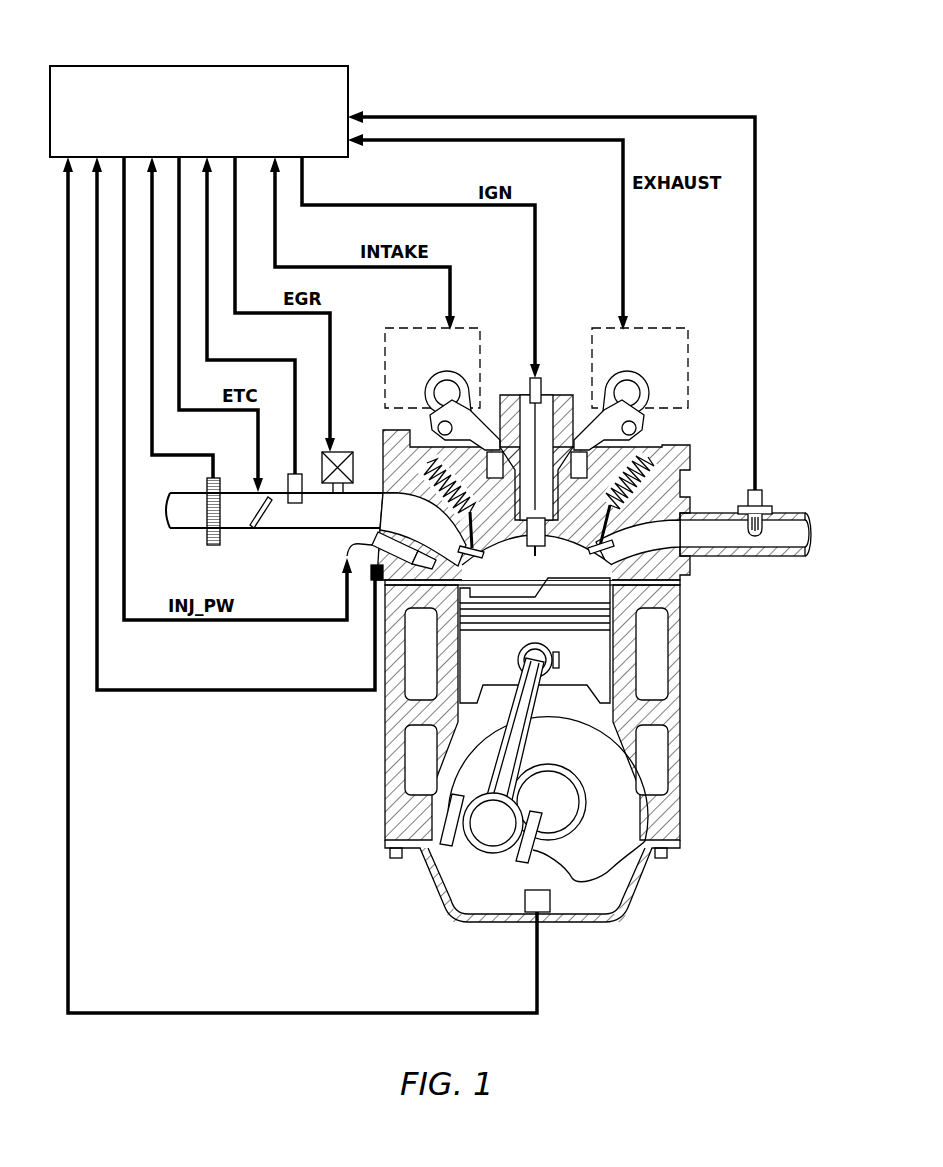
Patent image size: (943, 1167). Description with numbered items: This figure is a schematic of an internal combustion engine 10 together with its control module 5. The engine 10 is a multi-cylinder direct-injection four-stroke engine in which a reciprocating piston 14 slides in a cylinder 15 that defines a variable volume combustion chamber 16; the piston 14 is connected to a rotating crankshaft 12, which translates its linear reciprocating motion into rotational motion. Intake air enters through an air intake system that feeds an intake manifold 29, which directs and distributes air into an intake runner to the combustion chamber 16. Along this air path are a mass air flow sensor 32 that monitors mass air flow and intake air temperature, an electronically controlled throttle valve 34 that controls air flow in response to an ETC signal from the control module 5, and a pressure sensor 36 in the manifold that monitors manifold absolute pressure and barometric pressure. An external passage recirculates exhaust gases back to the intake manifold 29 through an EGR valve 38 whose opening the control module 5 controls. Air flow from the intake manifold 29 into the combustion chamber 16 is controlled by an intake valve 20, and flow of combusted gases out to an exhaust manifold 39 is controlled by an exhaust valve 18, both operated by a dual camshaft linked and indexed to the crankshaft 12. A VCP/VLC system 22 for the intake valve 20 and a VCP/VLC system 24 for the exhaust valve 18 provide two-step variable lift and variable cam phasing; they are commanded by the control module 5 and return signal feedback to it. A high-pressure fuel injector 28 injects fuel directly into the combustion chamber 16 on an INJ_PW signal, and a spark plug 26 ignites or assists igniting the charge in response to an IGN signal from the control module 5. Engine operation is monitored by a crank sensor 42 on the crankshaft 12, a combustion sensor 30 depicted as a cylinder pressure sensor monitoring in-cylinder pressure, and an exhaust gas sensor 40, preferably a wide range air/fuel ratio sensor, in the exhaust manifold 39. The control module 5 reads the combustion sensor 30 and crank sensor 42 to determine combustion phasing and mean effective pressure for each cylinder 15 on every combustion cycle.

The control module 5 is at (165, 62).
The internal combustion engine 10 is at (690, 712).
The crankshaft 12 is at (588, 857).
The piston 14 is at (588, 670).
The cylinder 15 is at (612, 595).
The combustion chamber 16 is at (511, 583).
The exhaust valve 18 is at (603, 544).
The intake valve 20 is at (457, 523).
The VCP/VLC system for intake valves 22 is at (475, 333).
The VCP/VLC system for exhaust valves 24 is at (677, 387).
The spark plug 26 is at (538, 385).
The fuel injector 28 is at (350, 560).
The intake manifold 29 is at (364, 498).
The combustion sensor 30 is at (375, 582).
The mass air flow sensor 32 is at (207, 540).
The throttle valve 34 is at (262, 515).
The pressure sensor 36 is at (295, 503).
The EGR valve 38 is at (333, 483).
The exhaust manifold 39 is at (670, 530).
The exhaust gas sensor 40 is at (762, 497).
The crank sensor 42 is at (530, 905).